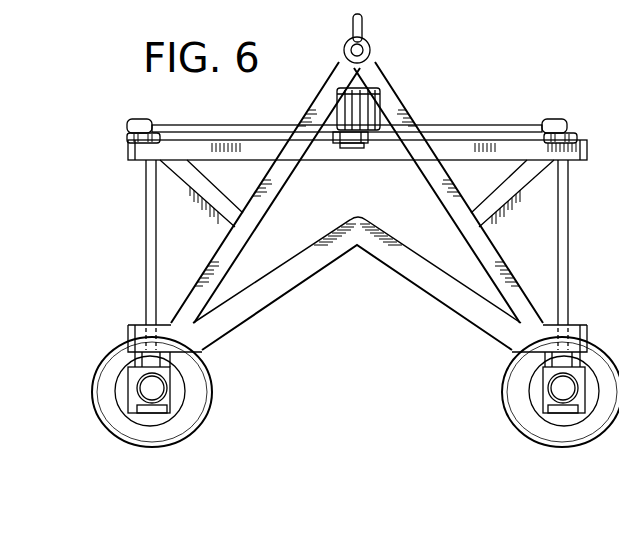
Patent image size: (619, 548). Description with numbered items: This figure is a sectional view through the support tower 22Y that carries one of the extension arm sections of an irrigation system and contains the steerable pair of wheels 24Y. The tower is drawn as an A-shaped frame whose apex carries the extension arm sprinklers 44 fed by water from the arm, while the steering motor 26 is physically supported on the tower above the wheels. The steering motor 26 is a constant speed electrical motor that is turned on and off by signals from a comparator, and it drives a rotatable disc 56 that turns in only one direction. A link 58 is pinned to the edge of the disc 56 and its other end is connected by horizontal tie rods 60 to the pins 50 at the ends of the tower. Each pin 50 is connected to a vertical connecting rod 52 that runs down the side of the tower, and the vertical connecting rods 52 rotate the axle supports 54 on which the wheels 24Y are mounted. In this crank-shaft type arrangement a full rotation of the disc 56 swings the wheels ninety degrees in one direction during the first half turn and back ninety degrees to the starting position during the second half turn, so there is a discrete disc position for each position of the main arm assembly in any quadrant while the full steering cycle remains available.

The extension arm sprinkler 44 is at (363, 23).
The steering motor 26 is at (357, 110).
The link 58 is at (334, 160).
The rotatable disc 56 is at (360, 146).
The horizontal tie rod 60 is at (468, 125).
The pin 50 is at (127, 133).
The vertical connecting rod 52 is at (146, 268).
The support tower 22Y is at (405, 262).
The axle support 54 is at (170, 353).
The wheels 24Y is at (190, 398).